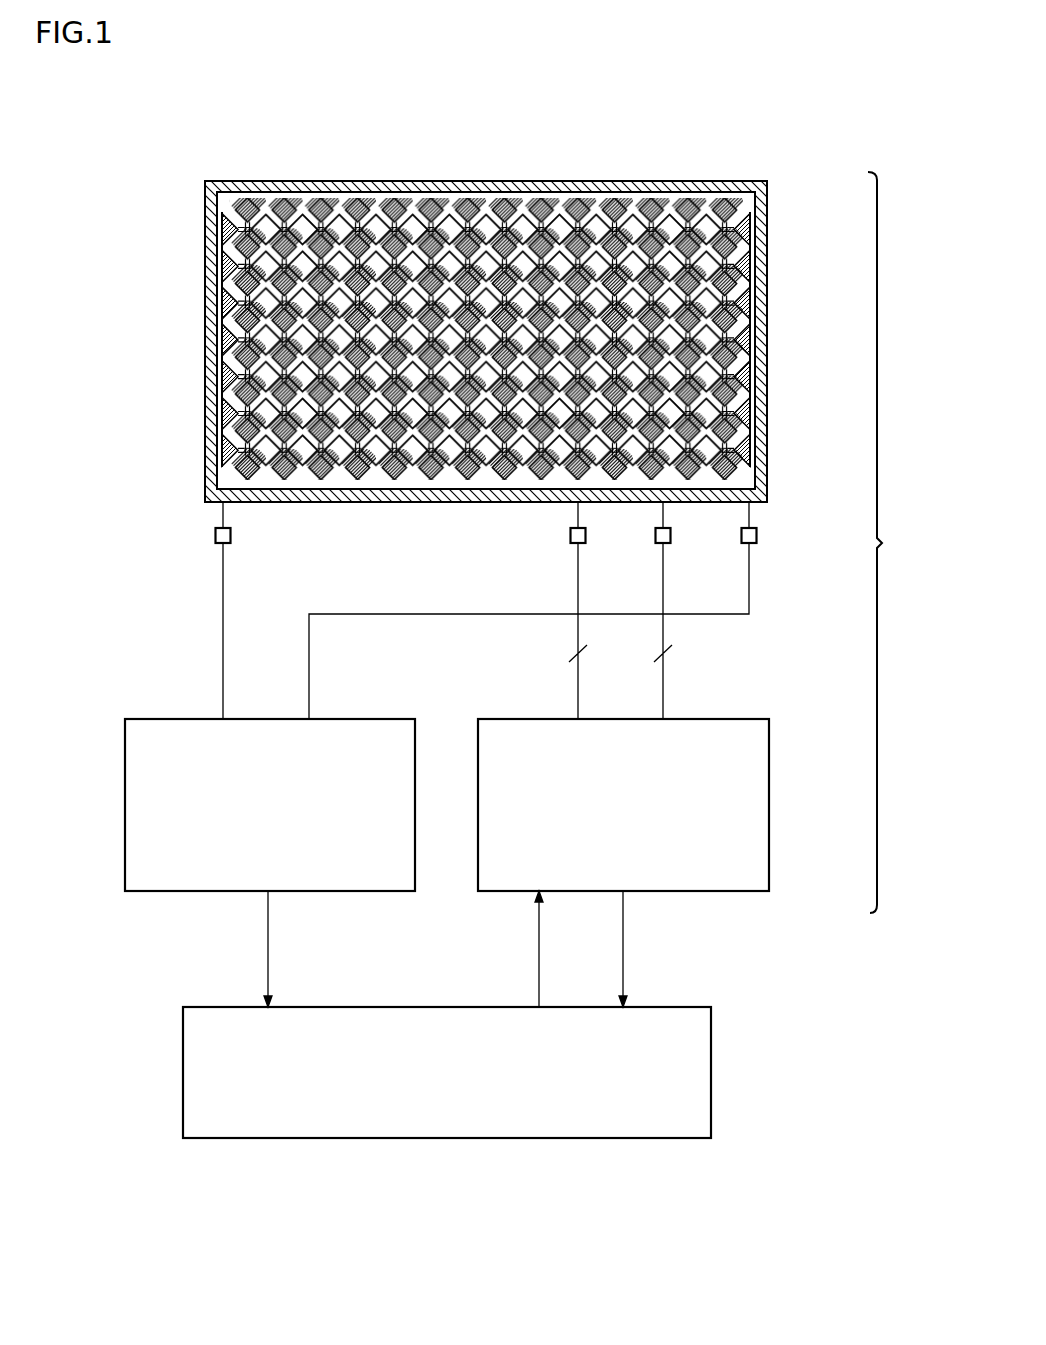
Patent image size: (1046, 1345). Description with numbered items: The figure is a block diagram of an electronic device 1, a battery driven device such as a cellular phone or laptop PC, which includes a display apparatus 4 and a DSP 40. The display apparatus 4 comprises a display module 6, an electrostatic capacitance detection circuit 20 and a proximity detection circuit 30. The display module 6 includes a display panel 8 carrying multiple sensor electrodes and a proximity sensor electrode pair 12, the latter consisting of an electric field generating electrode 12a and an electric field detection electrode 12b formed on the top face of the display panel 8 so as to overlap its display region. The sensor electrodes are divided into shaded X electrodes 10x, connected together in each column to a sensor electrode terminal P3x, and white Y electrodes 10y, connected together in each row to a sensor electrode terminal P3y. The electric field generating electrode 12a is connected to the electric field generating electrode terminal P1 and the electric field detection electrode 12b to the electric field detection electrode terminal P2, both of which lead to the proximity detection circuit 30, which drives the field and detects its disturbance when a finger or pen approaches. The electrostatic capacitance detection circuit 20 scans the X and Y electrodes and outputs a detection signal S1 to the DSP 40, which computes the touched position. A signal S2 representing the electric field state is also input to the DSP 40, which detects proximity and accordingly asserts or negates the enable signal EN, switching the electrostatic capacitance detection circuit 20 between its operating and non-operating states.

The electronic device 1 is at (495, 1227).
The display apparatus 4 is at (887, 542).
The display module 6 is at (206, 296).
The display panel 8 is at (466, 287).
The X electrodes 10x is at (365, 203).
The Y electrodes 10y is at (250, 430).
The proximity sensor electrode pair 12 is at (466, 280).
The electric field generating electrode 12a is at (223, 222).
The electric field detection electrode 12b is at (748, 230).
The electrostatic capacitance detection circuit 20 is at (770, 778).
The proximity detection circuit 30 is at (125, 786).
The DSP 40 is at (712, 1075).
The electric field generating electrode terminal P1 is at (223, 543).
The electric field detection electrode terminal P2 is at (749, 543).
The sensor electrode terminals arranged in columns P3x is at (578, 543).
The sensor electrode terminals arranged in rows P3y is at (663, 543).
The detection signal S1 is at (637, 949).
The signal representing the state of the electric field S2 is at (284, 949).
The enable signal EN is at (523, 949).